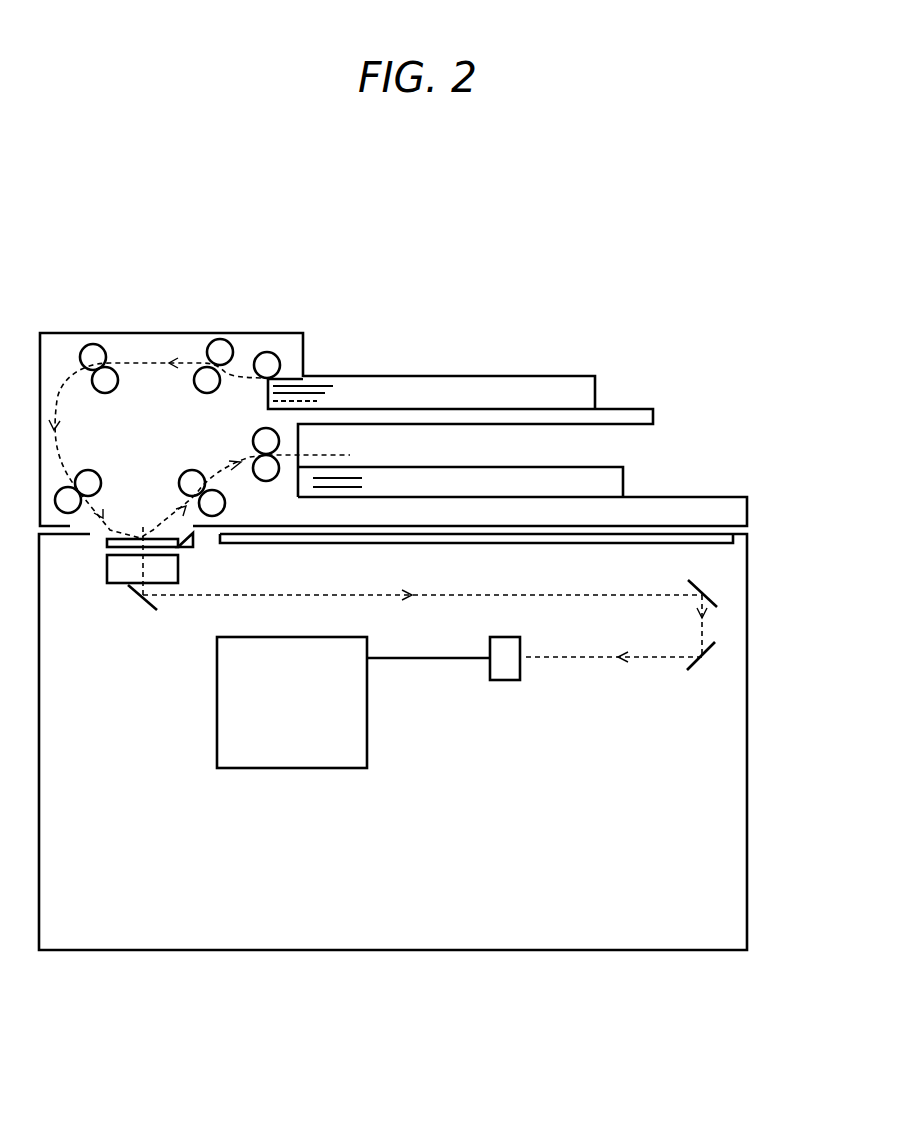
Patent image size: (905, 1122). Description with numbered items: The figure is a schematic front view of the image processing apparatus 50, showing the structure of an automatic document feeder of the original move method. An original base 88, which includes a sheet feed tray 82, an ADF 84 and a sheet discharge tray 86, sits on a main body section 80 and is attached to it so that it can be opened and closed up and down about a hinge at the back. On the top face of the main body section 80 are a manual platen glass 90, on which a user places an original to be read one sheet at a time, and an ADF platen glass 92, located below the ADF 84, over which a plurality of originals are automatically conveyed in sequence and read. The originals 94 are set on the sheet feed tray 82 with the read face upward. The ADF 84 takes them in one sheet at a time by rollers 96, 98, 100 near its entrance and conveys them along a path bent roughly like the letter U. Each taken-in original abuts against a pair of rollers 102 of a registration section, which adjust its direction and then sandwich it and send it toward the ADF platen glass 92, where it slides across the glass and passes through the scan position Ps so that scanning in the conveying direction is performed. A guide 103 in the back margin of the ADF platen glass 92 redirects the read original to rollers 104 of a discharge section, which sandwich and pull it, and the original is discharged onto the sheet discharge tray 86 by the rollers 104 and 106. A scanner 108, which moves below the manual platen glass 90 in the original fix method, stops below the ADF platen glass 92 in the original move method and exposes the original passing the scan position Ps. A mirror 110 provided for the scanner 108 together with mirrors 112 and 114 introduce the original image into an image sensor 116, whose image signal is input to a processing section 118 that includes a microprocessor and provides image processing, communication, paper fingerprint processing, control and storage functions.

The image processing apparatus 50 is at (721, 320).
The main body section 80 is at (748, 713).
The sheet feed tray 82 is at (628, 408).
The ADF 84 is at (150, 329).
The sheet discharge tray 86 is at (703, 495).
The original base 88 is at (752, 509).
The manual platen glass 90 is at (683, 545).
The ADF platen glass 92 is at (106, 544).
The originals 94 is at (537, 375).
The roller 96 is at (263, 351).
The roller 98 is at (217, 338).
The roller 100 is at (194, 386).
The pair of rollers of registration section 102 is at (87, 470).
The guide 103 is at (187, 548).
The rollers of discharge section 104 is at (180, 476).
The rollers 106 is at (252, 442).
The scanner 108 is at (107, 573).
The mirror 110 is at (140, 595).
The mirror 112 is at (713, 600).
The mirror 114 is at (698, 670).
The image sensor 116 is at (505, 682).
The processing section 118 is at (337, 770).
The scan position Ps is at (142, 537).